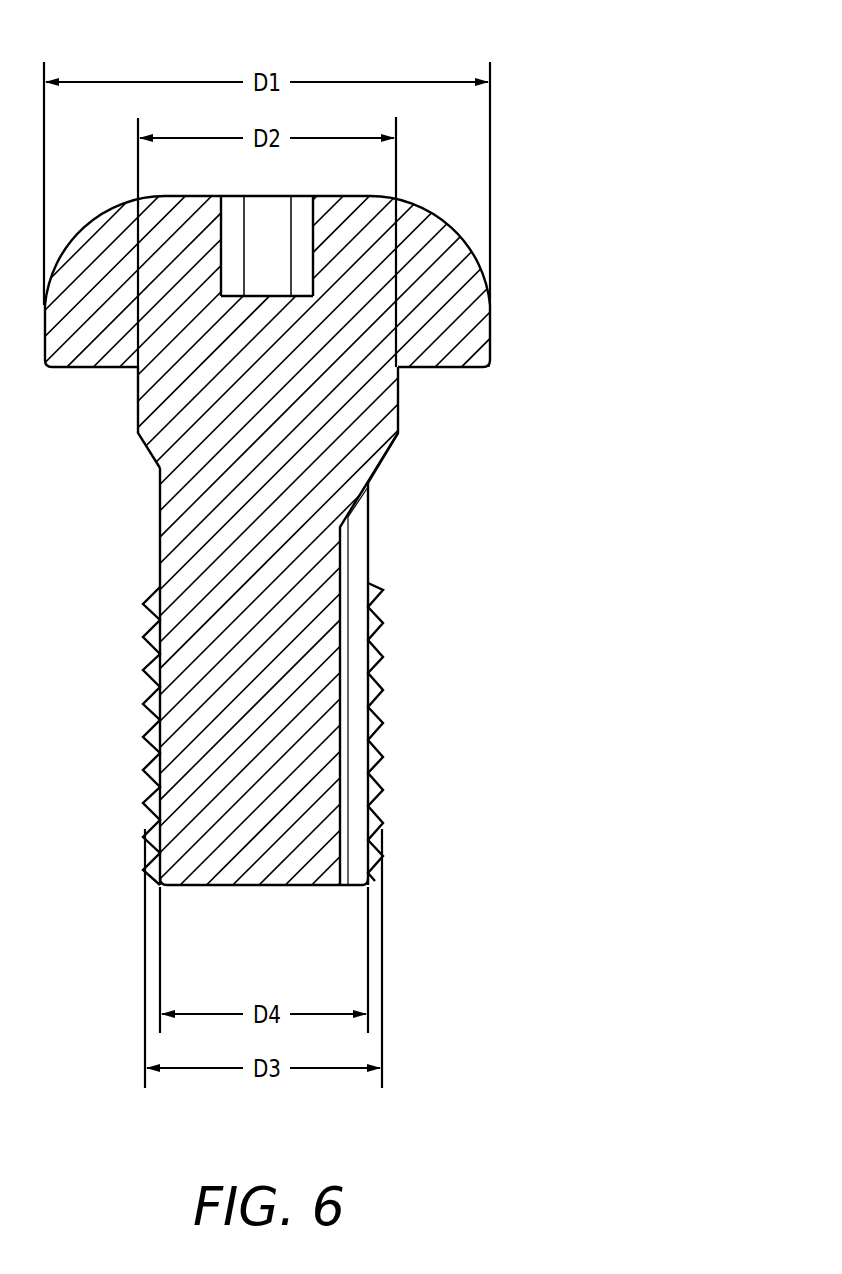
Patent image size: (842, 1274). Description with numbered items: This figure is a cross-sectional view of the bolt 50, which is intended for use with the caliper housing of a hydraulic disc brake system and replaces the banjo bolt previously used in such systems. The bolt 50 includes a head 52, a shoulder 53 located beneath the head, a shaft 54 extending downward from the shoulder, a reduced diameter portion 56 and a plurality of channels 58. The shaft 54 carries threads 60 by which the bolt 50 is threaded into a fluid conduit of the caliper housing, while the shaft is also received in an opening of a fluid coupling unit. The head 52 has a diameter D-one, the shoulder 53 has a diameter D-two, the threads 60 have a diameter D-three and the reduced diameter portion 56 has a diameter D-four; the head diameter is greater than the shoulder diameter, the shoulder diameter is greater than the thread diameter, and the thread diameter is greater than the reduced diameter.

The bolt 50 is at (505, 137).
The head 52 is at (475, 280).
The shoulder 53 is at (397, 407).
The shaft 54 is at (250, 885).
The reduced diameter portion 56 is at (160, 518).
The channels 58 is at (352, 757).
The threads 60 is at (147, 773).